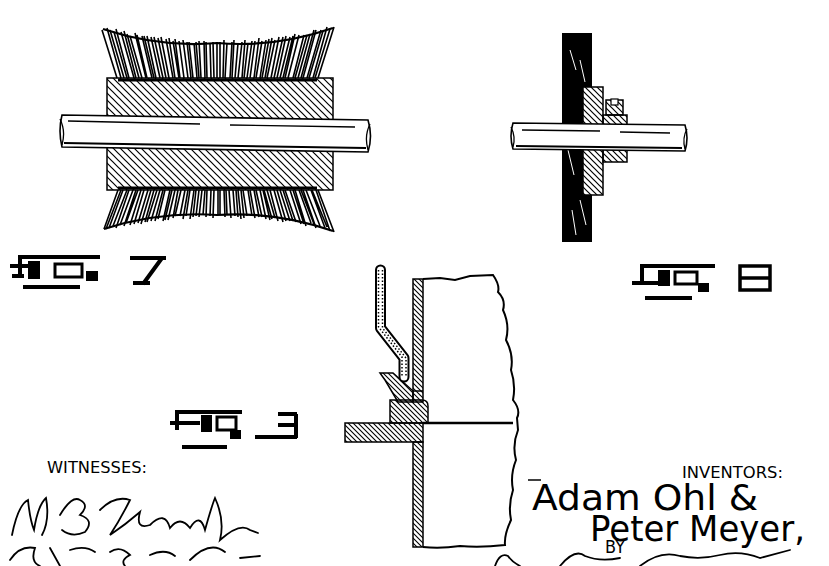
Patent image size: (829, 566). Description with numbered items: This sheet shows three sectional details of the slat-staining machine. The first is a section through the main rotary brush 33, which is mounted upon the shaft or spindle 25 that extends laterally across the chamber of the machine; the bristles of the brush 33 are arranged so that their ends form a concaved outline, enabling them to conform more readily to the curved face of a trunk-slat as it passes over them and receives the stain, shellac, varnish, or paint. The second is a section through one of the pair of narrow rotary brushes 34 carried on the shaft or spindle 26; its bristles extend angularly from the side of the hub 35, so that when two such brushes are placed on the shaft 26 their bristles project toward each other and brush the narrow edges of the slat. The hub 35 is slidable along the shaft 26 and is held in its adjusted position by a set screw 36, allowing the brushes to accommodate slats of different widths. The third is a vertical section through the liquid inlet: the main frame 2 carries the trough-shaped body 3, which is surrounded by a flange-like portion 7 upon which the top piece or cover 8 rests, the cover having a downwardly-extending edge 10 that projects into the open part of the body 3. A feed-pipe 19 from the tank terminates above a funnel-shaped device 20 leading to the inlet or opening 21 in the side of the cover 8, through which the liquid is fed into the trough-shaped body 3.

In FIG. 7, the rotary brush 33 is at (218, 44).
In FIG. 7, the shaft or spindle 25 is at (343, 128).
In FIG. 8, the narrow rotary brush 34 is at (593, 55).
In FIG. 8, the hub 35 is at (622, 165).
In FIG. 8, the set screw 36 is at (622, 105).
In FIG. 8, the shaft or spindle 26 is at (663, 133).
In FIG. 9, the top piece or cover 8 is at (423, 299).
In FIG. 9, the trough-shaped body 3 is at (413, 508).
In FIG. 9, the main frame 2 is at (357, 443).
In FIG. 9, the flange-like portion 7 is at (390, 412).
In FIG. 9, the funnel-shaped device 20 is at (384, 377).
In FIG. 9, the inlet or opening 21 is at (423, 395).
In FIG. 9, the downwardly-extending edge 10 is at (442, 417).
In FIG. 9, the feed-pipe 19 is at (375, 321).